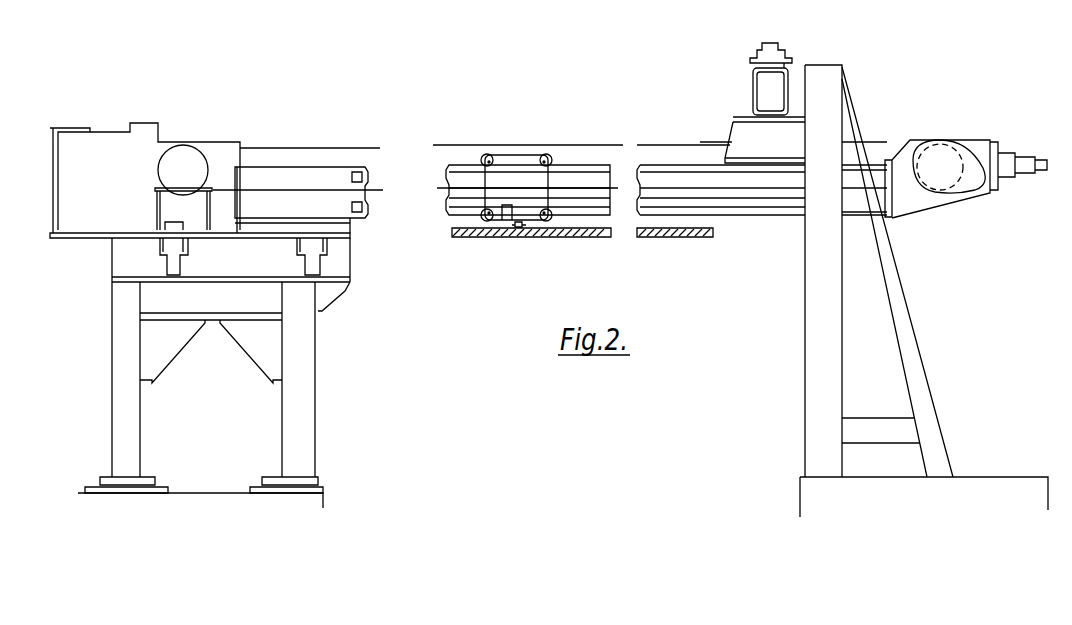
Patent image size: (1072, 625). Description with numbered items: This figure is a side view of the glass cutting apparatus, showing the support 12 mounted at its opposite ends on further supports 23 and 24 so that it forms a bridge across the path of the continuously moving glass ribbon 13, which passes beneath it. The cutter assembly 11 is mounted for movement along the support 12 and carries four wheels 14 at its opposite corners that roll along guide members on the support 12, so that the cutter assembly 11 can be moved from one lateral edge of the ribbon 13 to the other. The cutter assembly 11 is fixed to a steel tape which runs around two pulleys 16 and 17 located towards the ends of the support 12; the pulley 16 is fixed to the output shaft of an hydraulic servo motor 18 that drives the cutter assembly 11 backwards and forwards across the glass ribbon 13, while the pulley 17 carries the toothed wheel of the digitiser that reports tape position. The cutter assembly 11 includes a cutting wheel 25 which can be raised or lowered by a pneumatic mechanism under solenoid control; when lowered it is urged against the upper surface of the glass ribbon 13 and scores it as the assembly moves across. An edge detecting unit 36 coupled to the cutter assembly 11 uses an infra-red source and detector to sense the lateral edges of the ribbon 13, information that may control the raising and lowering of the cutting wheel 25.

The cutter assembly 11 is at (518, 157).
The support 12 is at (303, 172).
The glass ribbon 13 is at (580, 237).
The wheels 14 is at (487, 155).
The pulley 16 is at (193, 160).
The pulley 17 is at (935, 147).
The hydraulic servo motor 18 is at (98, 143).
The further support 23 is at (300, 337).
The further support 24 is at (813, 343).
The cutting wheel 25 is at (522, 228).
The edge detecting unit 36 is at (505, 218).